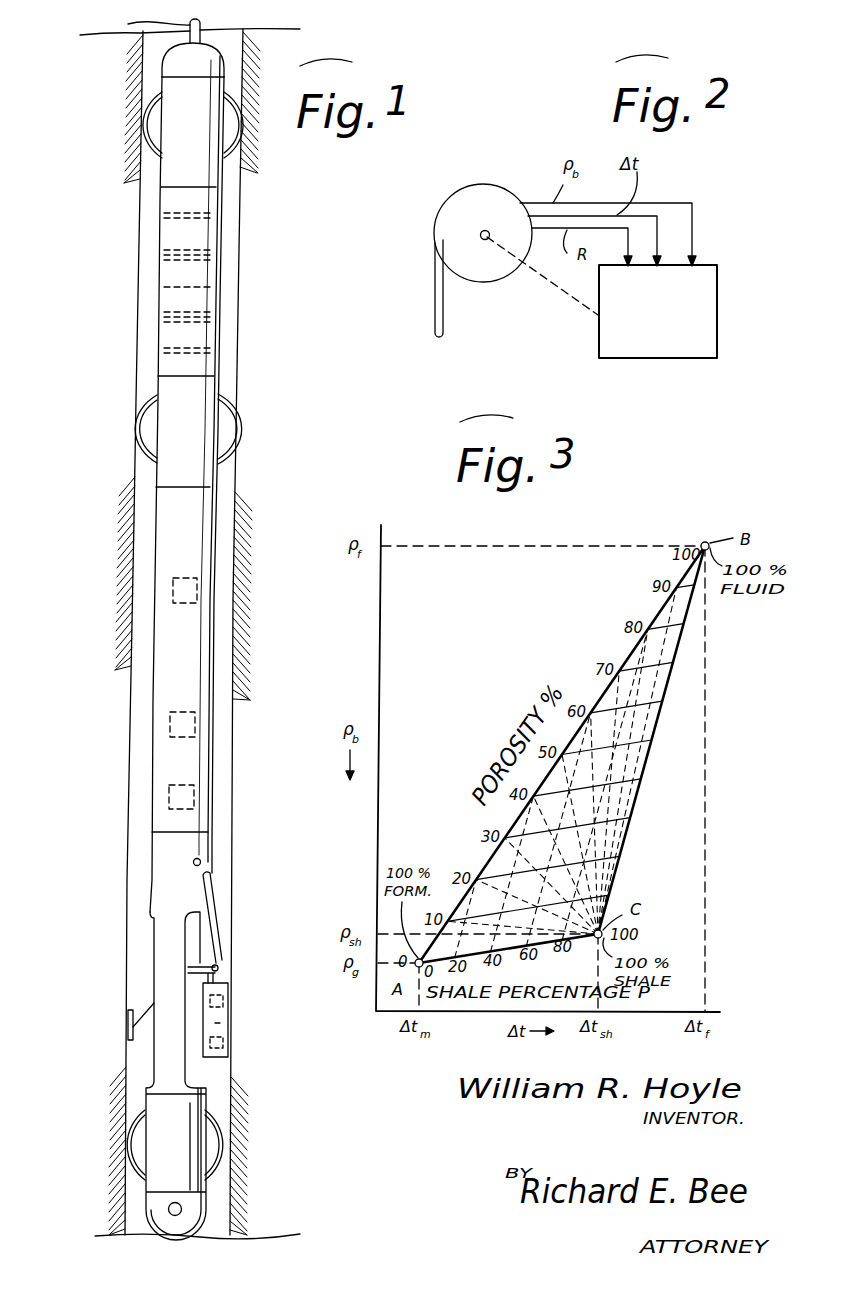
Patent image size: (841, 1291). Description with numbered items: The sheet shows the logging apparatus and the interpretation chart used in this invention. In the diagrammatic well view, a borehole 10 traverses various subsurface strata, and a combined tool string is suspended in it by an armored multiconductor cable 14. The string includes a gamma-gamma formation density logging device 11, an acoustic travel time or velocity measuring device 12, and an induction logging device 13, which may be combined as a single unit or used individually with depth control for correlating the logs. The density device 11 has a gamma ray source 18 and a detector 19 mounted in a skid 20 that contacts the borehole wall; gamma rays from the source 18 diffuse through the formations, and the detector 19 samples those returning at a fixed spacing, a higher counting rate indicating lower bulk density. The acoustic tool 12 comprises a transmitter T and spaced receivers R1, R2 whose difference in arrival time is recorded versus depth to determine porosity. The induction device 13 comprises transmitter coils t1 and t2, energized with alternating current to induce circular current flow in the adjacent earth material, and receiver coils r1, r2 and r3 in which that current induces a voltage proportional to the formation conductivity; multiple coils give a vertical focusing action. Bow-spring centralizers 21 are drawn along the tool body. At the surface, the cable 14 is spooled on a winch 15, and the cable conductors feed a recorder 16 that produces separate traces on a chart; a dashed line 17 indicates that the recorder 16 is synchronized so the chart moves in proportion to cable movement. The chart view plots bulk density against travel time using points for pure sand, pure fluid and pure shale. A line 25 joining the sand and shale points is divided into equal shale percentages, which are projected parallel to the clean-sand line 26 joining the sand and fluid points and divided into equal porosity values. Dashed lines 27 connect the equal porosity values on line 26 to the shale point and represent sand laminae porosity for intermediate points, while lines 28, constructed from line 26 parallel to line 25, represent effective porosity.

In FIG. 1, the borehole 10 is at (136, 505).
In FIG. 1, the gamma-gamma formation density logging device 11 is at (253, 1024).
In FIG. 1, the acoustic travel time measuring device 12 is at (156, 653).
In FIG. 1, the induction logging device 13 is at (135, 286).
In FIG. 1, the armored multiconductor cable 14 is at (152, 29).
In FIG. 2, the armored multiconductor cable 14 is at (435, 303).
In FIG. 2, the winch 15 is at (511, 188).
In FIG. 2, the recorder 16 is at (672, 321).
In FIG. 2, the dashed line 17 is at (547, 285).
In FIG. 1, the gamma ray source 18 is at (227, 1042).
In FIG. 1, the detector 19 is at (233, 997).
In FIG. 1, the skid 20 is at (215, 1023).
In FIG. 1, the bow spring centralizer 21 is at (147, 164).
In FIG. 3, the line connecting A and C 25 is at (507, 955).
In FIG. 3, the clean-sand line 26 is at (490, 853).
In FIG. 3, the dashed lines 27 is at (513, 891).
In FIG. 3, the effective porosity lines 28 is at (620, 751).
In FIG. 1, the transmitter T is at (173, 580).
In FIG. 1, the first receiver R1 is at (170, 722).
In FIG. 1, the second receiver R2 is at (169, 800).
In FIG. 1, the first receiver coil r1 is at (183, 247).
In FIG. 1, the second receiver coil r2 is at (190, 213).
In FIG. 1, the third receiver coil r3 is at (180, 287).
In FIG. 1, the first transmitter coil t1 is at (187, 328).
In FIG. 1, the second transmitter coil t2 is at (188, 355).